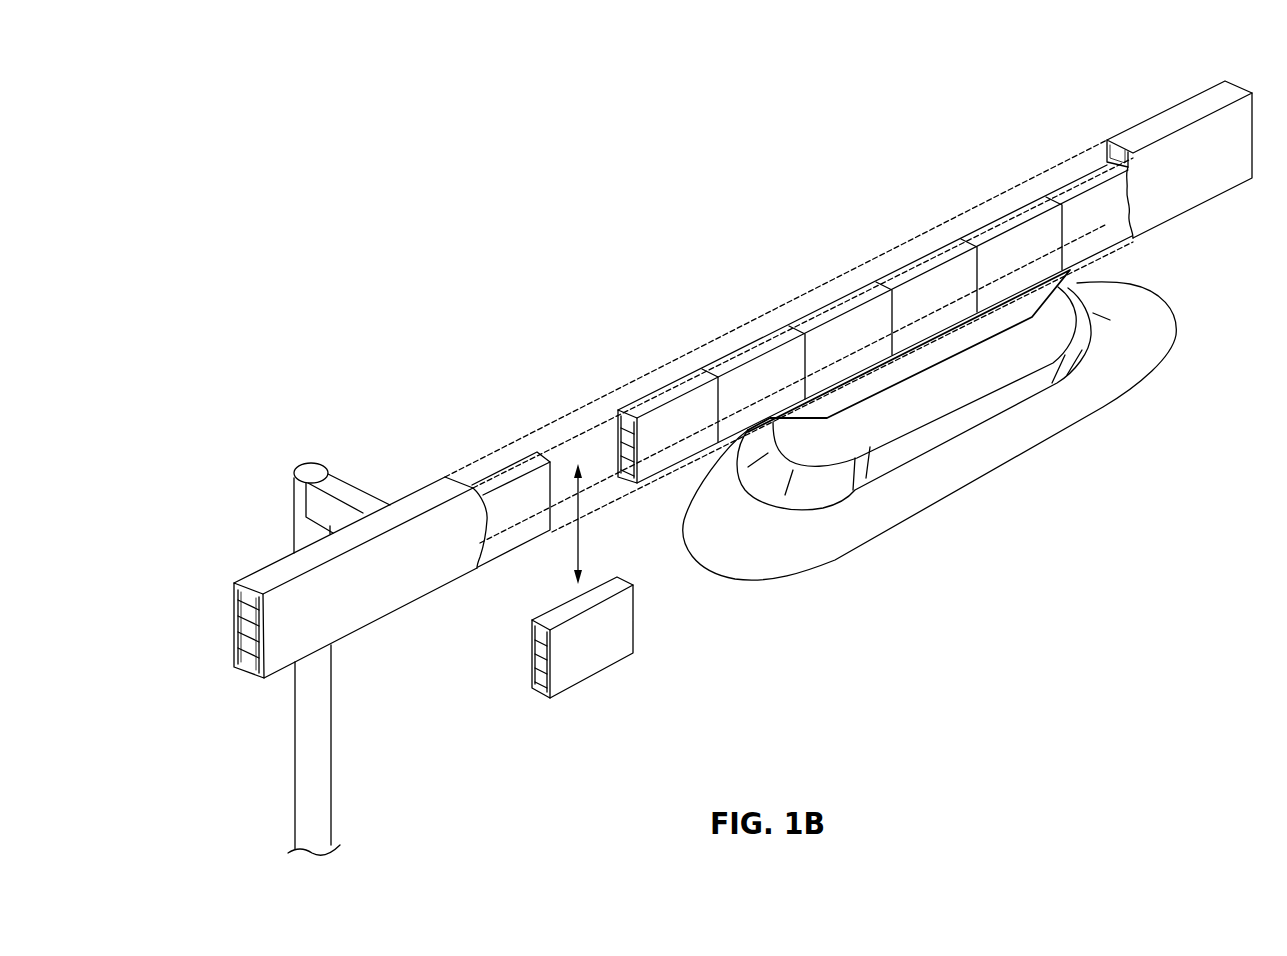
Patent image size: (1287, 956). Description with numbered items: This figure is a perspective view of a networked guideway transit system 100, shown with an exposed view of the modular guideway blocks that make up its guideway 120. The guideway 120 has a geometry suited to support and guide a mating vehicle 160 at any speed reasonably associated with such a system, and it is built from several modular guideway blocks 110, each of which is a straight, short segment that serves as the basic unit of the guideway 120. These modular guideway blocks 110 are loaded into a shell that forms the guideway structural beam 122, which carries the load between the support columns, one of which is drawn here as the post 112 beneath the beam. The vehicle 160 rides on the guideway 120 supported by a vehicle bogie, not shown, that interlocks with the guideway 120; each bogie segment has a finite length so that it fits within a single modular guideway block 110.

The networked guideway transit system 100 is at (335, 323).
The modular guideway block 110 is at (605, 630).
The post 112 is at (305, 760).
The guideway 120 is at (728, 326).
The guideway structural beam 122 is at (1133, 232).
The vehicle 160 is at (1153, 358).